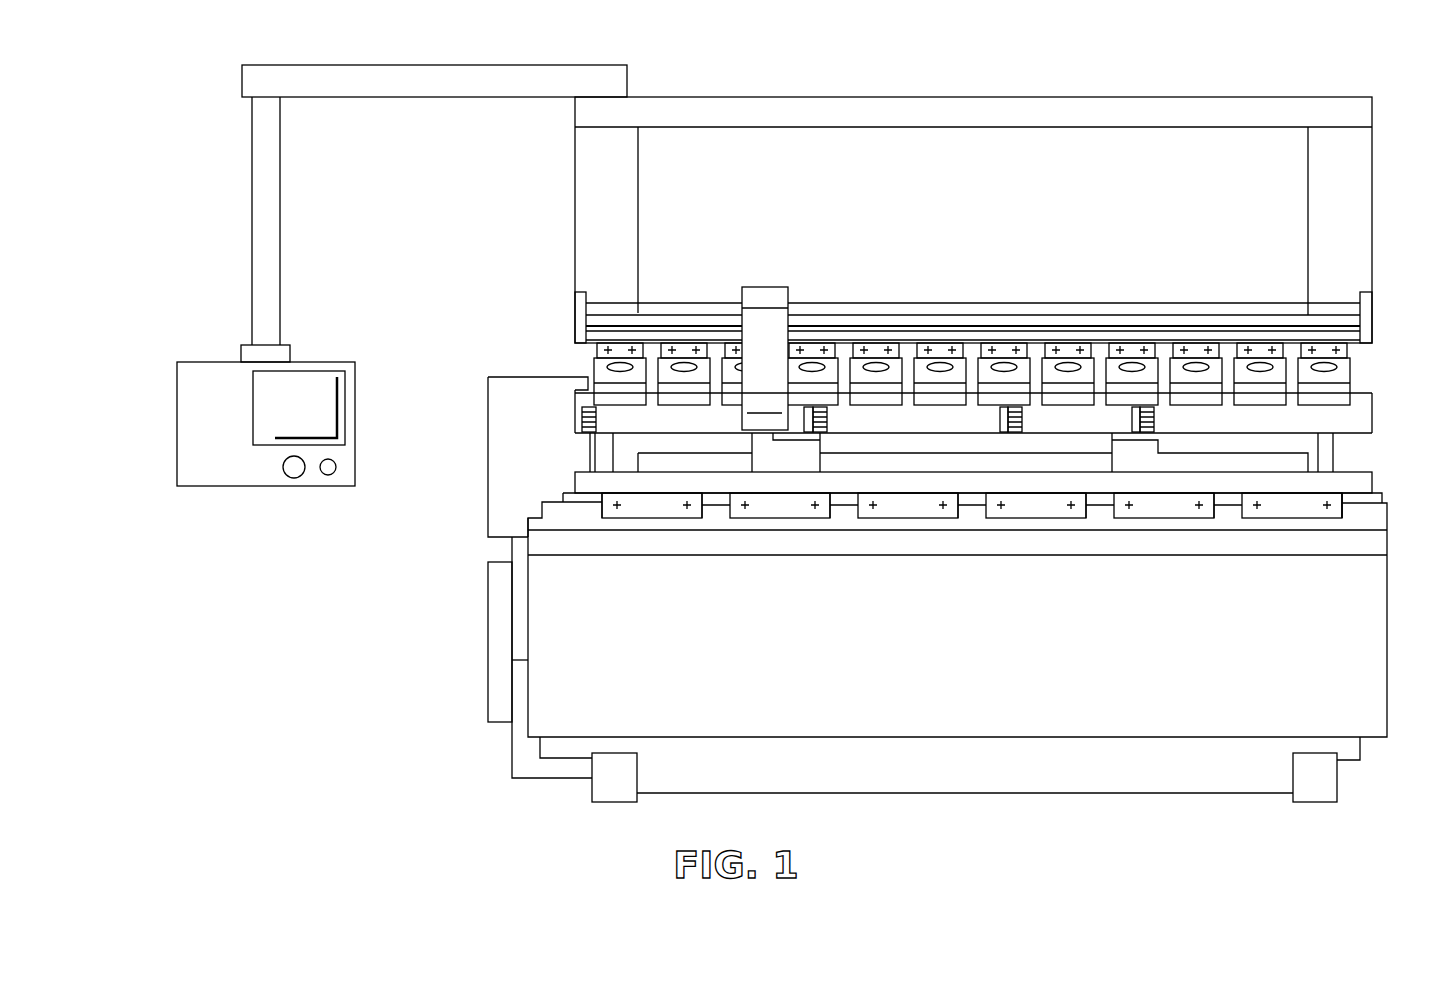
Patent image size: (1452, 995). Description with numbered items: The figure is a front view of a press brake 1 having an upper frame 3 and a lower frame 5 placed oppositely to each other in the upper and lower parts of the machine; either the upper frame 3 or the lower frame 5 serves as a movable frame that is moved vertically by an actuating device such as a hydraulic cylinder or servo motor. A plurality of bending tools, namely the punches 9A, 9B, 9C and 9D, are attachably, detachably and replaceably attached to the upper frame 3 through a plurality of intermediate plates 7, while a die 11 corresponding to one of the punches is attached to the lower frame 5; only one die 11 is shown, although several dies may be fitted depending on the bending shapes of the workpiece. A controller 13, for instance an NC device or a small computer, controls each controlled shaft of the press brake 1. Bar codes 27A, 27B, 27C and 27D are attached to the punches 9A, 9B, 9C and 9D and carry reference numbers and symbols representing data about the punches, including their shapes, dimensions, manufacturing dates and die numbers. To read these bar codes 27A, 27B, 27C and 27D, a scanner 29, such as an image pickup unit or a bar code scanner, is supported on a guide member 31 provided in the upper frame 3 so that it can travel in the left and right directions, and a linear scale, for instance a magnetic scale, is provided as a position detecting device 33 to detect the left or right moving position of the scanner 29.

The press brake 1 is at (1418, 120).
The upper frame 3 is at (1292, 233).
The lower frame 5 is at (1378, 670).
The intermediate plates 7 is at (1343, 378).
The punch 9A is at (667, 428).
The punch 9B is at (860, 427).
The punch 9C is at (1097, 423).
The punch 9D is at (1358, 423).
The die 11 is at (1365, 483).
The controller 13 is at (190, 421).
The bar code 27A is at (582, 418).
The bar code 27B is at (825, 420).
The bar code 27C is at (1022, 422).
The bar code 27D is at (1153, 422).
The scanner 29 is at (771, 317).
The guide member 31 is at (1116, 315).
The position detecting device 33 is at (891, 302).